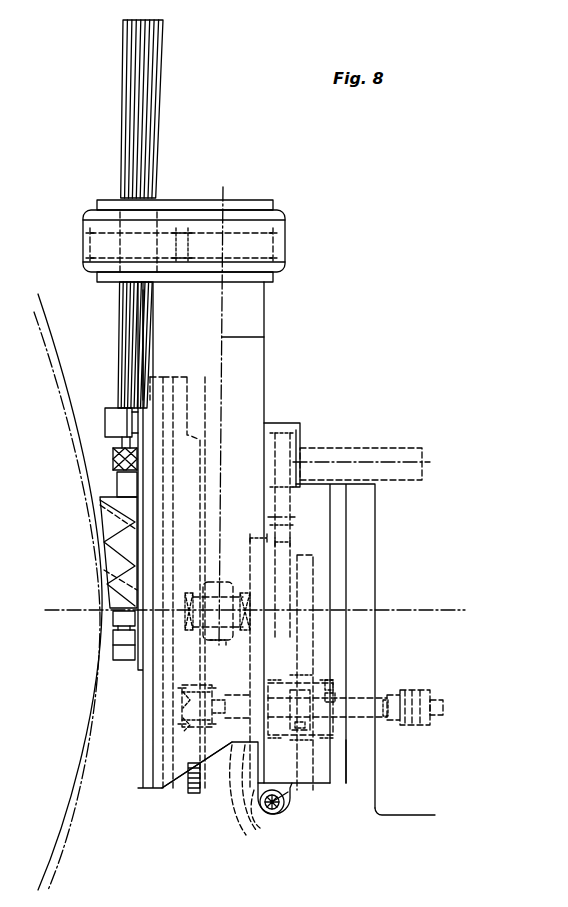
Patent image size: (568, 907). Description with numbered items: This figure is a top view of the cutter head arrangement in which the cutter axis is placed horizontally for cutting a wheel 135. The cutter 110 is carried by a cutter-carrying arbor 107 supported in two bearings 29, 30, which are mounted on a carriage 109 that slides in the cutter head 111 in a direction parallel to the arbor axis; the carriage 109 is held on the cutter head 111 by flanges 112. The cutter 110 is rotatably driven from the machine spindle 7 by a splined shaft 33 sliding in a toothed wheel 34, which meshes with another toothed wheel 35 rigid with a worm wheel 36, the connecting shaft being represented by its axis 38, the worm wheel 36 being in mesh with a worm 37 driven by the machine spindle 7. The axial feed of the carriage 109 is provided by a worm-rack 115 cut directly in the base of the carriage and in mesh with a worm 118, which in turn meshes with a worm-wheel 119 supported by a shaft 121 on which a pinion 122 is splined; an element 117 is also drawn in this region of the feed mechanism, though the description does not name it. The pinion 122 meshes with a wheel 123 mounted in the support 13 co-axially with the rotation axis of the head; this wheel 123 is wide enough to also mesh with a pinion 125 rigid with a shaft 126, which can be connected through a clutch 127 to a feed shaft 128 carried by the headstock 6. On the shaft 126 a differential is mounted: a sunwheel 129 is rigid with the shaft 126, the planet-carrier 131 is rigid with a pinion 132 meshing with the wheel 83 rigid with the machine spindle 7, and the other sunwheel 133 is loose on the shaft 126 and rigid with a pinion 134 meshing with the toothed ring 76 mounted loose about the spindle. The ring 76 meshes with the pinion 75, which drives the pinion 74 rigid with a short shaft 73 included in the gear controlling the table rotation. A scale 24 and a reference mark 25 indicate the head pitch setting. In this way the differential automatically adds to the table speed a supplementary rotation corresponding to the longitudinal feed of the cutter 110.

The splined shaft 33 is at (150, 52).
The toothed wheel 34 is at (85, 250).
The toothed wheel 35 is at (282, 245).
The cutter head 111 is at (252, 318).
The flanges 112 is at (157, 318).
The shaft axis 38 is at (265, 337).
The carriage 109 is at (188, 392).
The worm-rack 115 is at (196, 508).
The bearing 30 is at (106, 424).
The cutter-carrying arbor 107 is at (120, 484).
The cutter 110 is at (118, 536).
The bearing 29 is at (118, 645).
The toothed wheel 74 is at (282, 428).
The short shaft 73 is at (374, 456).
The toothed wheel 75 is at (278, 505).
The toothed ring 76 is at (300, 552).
The wheel 83 is at (318, 553).
The machine spindle 7 is at (390, 612).
The wheel 123 is at (250, 555).
The worm wheel 36 is at (243, 595).
The worm 37 is at (230, 640).
The gear 117 is at (195, 688).
The worm 118 is at (183, 700).
The worm-wheel 119 is at (180, 726).
The shaft 121 is at (205, 748).
The pinion 122 is at (246, 834).
The pinion 125 is at (260, 828).
The scale 24 is at (282, 804).
The reference mark 25 is at (280, 814).
The support 13 is at (305, 772).
The pinion 132 is at (318, 738).
The differential sunwheel 133 is at (335, 732).
The pinion 134 is at (285, 734).
The planet-carrier 131 is at (328, 682).
The sunwheel 129 is at (333, 697).
The shaft 126 is at (386, 717).
The clutch 127 is at (405, 694).
The feed shaft 128 is at (436, 716).
The headstock 6 is at (405, 814).
The wheel to be cut 135 is at (62, 832).